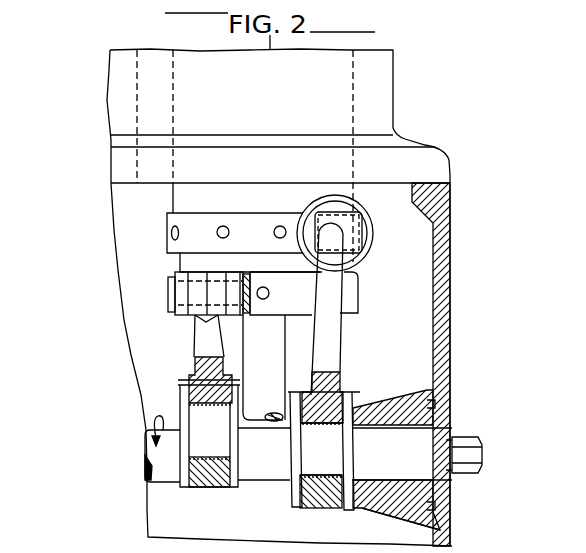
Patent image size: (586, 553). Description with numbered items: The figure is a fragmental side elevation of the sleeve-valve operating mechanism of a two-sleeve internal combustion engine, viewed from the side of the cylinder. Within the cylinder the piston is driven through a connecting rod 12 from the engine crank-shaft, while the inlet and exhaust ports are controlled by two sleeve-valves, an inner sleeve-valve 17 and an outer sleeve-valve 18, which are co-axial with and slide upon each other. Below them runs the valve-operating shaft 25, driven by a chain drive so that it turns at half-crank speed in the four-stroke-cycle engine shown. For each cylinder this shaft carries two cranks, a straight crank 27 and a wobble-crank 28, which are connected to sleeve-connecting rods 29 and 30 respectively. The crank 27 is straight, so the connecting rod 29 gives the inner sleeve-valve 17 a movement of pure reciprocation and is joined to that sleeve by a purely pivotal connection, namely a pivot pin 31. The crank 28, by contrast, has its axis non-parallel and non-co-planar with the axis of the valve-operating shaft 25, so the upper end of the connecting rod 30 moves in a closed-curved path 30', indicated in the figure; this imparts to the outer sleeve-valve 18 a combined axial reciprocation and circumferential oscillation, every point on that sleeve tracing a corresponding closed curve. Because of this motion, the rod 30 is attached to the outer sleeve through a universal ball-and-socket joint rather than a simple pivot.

The connecting rod 12 is at (284, 350).
The inner sleeve-valve 17 is at (180, 262).
The outer sleeve-valve 18 is at (172, 197).
The valve-operating shaft 25 is at (163, 483).
The straight crank 27 is at (209, 422).
The wobble-crank 28 is at (324, 441).
The sleeve-connecting rod 29 is at (195, 343).
The sleeve-connecting rod 30 is at (347, 309).
The closed-curved path of travel 30' is at (357, 233).
The pivot pin 31 is at (168, 293).